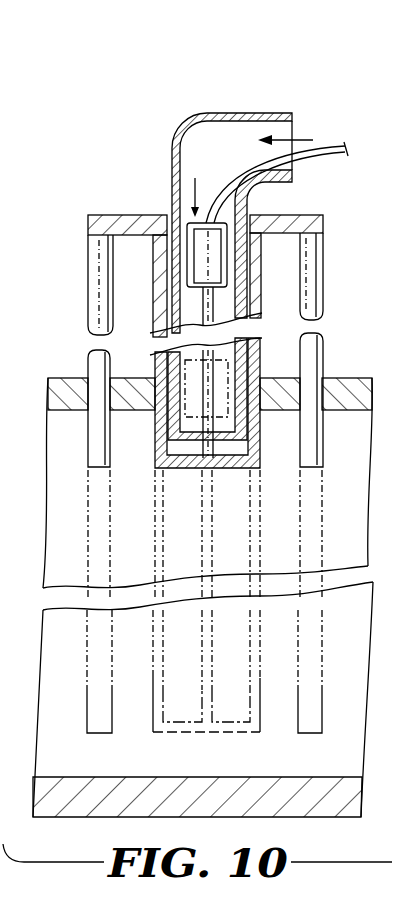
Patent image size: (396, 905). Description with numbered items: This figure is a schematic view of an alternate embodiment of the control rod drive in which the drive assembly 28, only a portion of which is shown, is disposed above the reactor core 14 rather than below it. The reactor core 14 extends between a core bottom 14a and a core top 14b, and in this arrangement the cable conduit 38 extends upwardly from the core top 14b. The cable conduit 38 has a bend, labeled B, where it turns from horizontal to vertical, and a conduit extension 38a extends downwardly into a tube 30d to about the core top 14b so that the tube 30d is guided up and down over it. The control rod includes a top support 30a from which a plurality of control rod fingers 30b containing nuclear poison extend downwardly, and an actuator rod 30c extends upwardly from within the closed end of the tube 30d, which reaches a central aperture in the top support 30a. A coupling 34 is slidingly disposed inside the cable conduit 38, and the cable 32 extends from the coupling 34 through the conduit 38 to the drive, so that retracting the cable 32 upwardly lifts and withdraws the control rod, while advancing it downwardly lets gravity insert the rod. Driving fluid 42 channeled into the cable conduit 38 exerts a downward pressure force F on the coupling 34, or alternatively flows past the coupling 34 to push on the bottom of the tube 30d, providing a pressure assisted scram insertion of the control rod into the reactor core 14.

The reactor core 14 is at (45, 511).
The core bottom 14a is at (304, 814).
The core top 14b is at (356, 378).
The drive assembly 28 is at (233, 113).
The top support 30a is at (130, 215).
The control rod fingers 30b is at (323, 296).
The actuator rod 30c is at (228, 447).
The tube 30d is at (262, 251).
The cable 32 is at (318, 158).
The coupling 34 is at (195, 262).
The cable conduit 38 is at (260, 114).
The conduit extension 38a is at (178, 442).
The driving fluid 42 is at (301, 140).
The bend B is at (185, 142).
The pressure force F is at (199, 188).